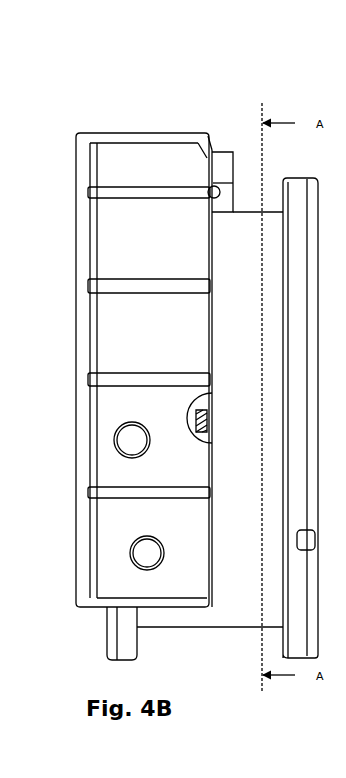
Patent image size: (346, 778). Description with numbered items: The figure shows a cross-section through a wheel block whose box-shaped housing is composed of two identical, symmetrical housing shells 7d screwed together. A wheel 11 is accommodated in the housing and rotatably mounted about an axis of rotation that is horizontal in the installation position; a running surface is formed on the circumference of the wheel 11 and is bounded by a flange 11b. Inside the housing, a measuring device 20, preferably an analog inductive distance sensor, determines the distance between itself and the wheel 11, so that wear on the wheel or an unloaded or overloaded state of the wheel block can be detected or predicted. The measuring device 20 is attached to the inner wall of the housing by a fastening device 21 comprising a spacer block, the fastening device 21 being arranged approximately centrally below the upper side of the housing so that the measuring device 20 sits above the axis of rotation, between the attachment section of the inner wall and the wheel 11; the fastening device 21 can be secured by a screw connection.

The housing shell 7d is at (99, 127).
The fastening device 21 is at (211, 160).
The measuring device 20 is at (221, 190).
The wheel 11 is at (242, 209).
The flange 11b is at (286, 643).